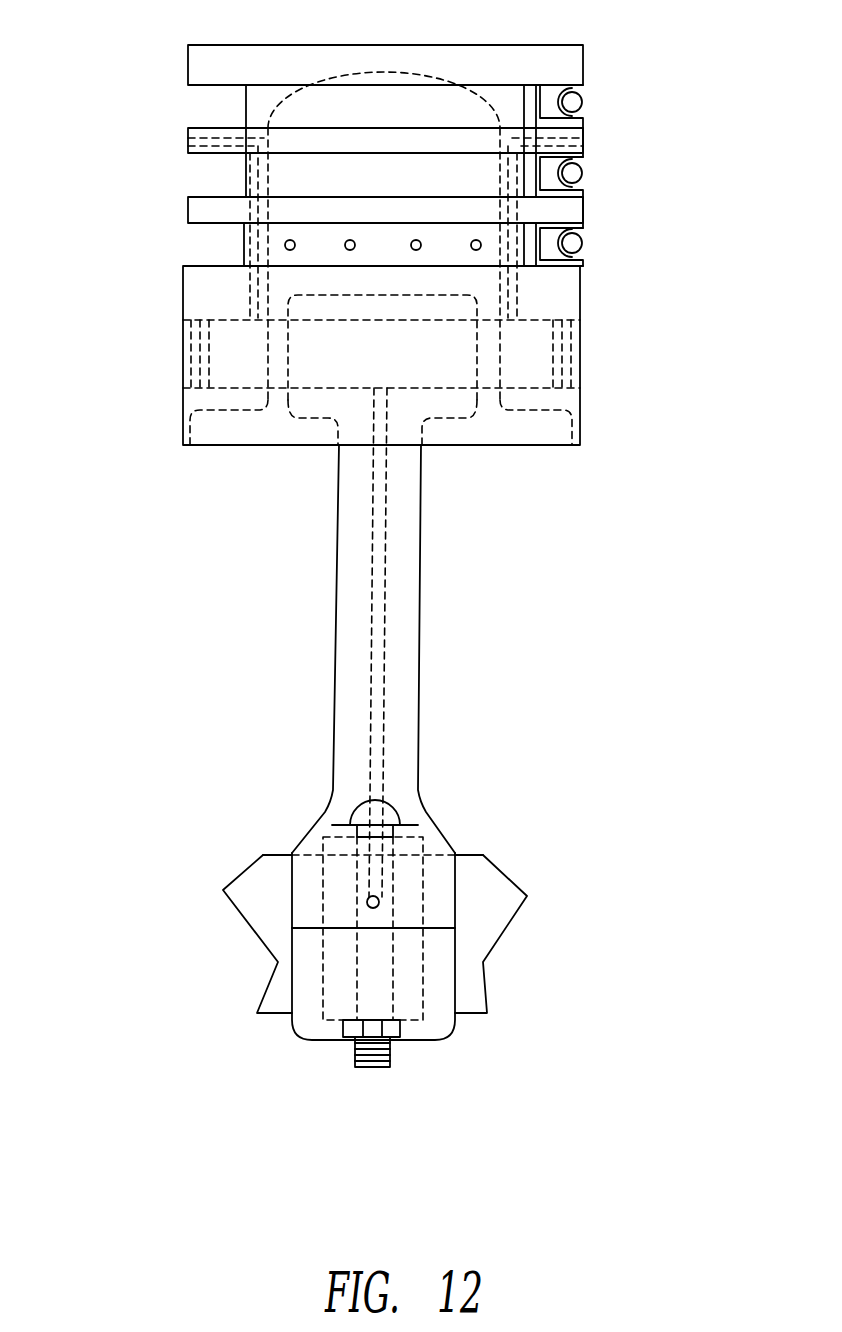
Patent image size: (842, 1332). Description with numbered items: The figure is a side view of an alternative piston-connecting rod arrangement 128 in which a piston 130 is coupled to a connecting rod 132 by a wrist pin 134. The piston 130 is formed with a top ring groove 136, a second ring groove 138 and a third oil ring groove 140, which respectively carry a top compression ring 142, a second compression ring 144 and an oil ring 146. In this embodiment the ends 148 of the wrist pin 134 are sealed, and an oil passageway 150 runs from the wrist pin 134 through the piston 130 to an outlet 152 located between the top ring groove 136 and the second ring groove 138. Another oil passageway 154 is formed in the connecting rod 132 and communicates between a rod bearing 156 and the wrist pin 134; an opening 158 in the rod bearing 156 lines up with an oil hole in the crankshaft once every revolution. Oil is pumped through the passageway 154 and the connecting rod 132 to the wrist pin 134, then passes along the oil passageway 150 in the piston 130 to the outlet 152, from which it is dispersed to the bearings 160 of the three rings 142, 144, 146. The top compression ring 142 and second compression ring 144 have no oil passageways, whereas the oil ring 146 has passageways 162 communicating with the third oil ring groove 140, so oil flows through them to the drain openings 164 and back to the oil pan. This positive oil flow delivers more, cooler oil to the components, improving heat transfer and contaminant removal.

The piston-connecting rod arrangement 128 is at (398, 535).
The piston 130 is at (187, 55).
The connecting rod 132 is at (333, 677).
The wrist pin 134 is at (452, 368).
The top ring groove 136 is at (192, 102).
The second ring groove 138 is at (195, 178).
The third oil ring groove 140 is at (180, 243).
The top compression ring 142 is at (551, 86).
The second compression ring 144 is at (557, 188).
The oil ring 146 is at (553, 261).
The ends of the wrist pin 148 is at (175, 368).
The oil passageway 150 is at (240, 285).
The outlet 152 is at (188, 142).
The oil passageway 154 is at (384, 613).
The rod bearing 156 is at (405, 877).
The opening 158 is at (380, 907).
The bearings 160 is at (583, 101).
The passageways 162 is at (545, 242).
The drain openings 164 is at (283, 245).